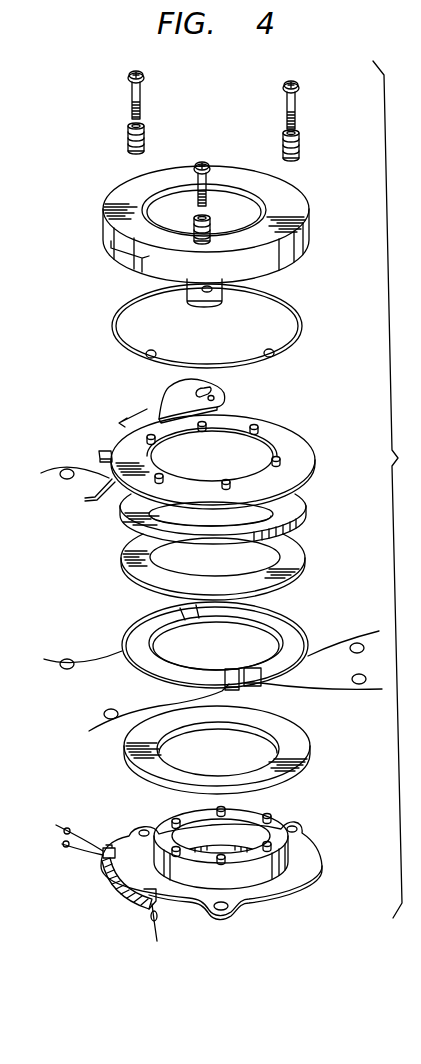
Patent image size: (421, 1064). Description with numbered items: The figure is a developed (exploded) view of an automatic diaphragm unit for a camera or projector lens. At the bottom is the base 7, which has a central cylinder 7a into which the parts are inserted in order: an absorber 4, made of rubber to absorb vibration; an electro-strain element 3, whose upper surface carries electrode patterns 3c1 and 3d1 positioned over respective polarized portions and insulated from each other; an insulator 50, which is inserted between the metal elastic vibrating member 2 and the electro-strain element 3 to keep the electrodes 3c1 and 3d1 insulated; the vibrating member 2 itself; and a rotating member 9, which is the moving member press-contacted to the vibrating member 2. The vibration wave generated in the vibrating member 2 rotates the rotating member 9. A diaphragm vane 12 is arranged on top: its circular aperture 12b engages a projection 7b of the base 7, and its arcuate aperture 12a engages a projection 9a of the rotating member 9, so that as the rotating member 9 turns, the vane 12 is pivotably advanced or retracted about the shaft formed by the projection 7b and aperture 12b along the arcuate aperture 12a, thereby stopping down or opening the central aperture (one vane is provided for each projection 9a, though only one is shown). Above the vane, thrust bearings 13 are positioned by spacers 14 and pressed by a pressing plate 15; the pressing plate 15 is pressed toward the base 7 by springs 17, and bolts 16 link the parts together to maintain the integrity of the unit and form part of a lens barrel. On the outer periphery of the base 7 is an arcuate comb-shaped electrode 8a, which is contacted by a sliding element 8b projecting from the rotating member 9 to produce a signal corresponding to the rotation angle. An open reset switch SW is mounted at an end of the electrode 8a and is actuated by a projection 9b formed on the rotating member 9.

The vibrating member 2 is at (294, 506).
The electro-strain element 3 is at (216, 632).
The electrode pattern 3c1 is at (288, 618).
The electrode pattern 3d1 is at (138, 628).
The absorber 4 is at (300, 738).
The base 7 is at (233, 850).
The central cylinder 7a is at (297, 850).
The projection 7b is at (271, 815).
The arcuate comb-shaped electrode 8a is at (105, 880).
The sliding element 8b is at (86, 500).
The rotating member 9 is at (207, 454).
The projection 9a is at (259, 427).
The projection 9b is at (107, 450).
The diaphragm vane 12 is at (173, 392).
The arcuate aperture 12a is at (216, 388).
The circular aperture 12b is at (221, 398).
The thrust bearings 13 is at (156, 350).
The spacers 14 is at (303, 308).
The pressing plate 15 is at (299, 248).
The bolts 16 is at (131, 94).
The springs 17 is at (128, 139).
The insulator 50 is at (298, 551).
The open reset switch SW is at (109, 847).